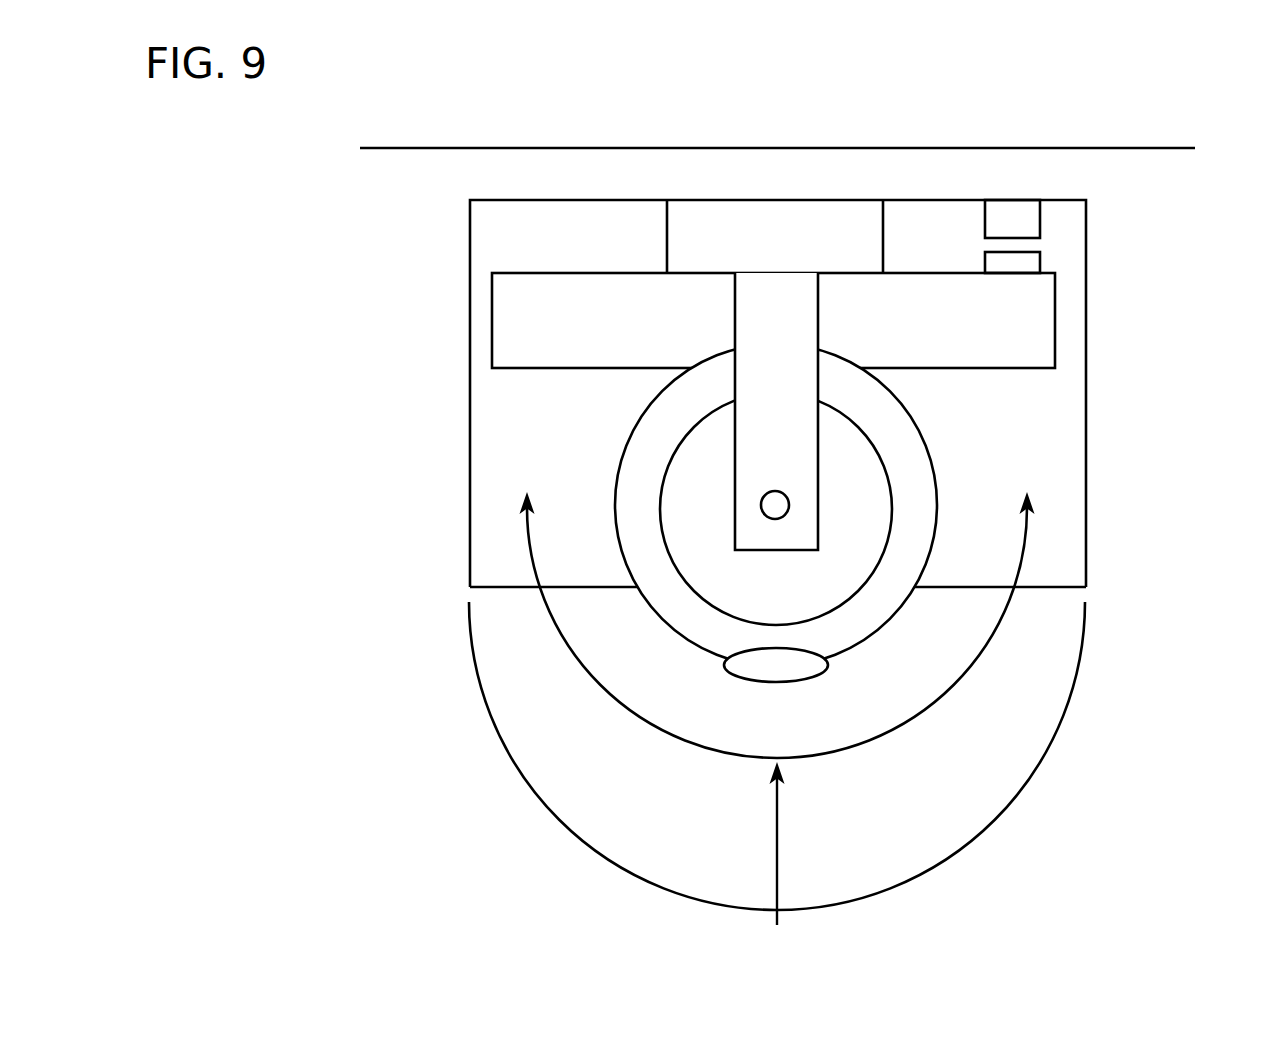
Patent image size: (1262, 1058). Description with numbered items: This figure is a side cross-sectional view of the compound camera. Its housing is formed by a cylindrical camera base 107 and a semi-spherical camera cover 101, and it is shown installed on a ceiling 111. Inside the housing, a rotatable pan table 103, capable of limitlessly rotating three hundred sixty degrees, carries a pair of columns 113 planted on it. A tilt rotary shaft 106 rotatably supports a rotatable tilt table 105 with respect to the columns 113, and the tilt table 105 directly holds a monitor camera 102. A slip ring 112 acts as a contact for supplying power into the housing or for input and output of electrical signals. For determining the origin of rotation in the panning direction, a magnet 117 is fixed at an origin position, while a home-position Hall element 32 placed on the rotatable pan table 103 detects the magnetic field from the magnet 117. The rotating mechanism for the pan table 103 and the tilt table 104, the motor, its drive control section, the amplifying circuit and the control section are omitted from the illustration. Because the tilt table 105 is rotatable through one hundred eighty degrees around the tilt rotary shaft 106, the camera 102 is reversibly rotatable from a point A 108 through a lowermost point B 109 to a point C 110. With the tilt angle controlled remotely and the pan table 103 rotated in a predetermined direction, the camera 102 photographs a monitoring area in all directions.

The home-position Hall element 32 is at (1040, 260).
The camera cover 101 is at (505, 806).
The monitor camera 102 is at (826, 702).
The rotatable pan table 103 is at (594, 296).
The rotatable tilt table 104 is at (984, 666).
The rotatable tilt table 105 is at (946, 443).
The tilt rotary shaft 106 is at (792, 482).
The camera base 107 is at (1096, 402).
The point A 108 is at (502, 478).
The lowermost point B 109 is at (769, 860).
The point C 110 is at (1055, 487).
The ceiling 111 is at (777, 129).
The slip ring 112 is at (764, 218).
The columns 113 is at (770, 308).
The magnet 117 is at (1040, 218).